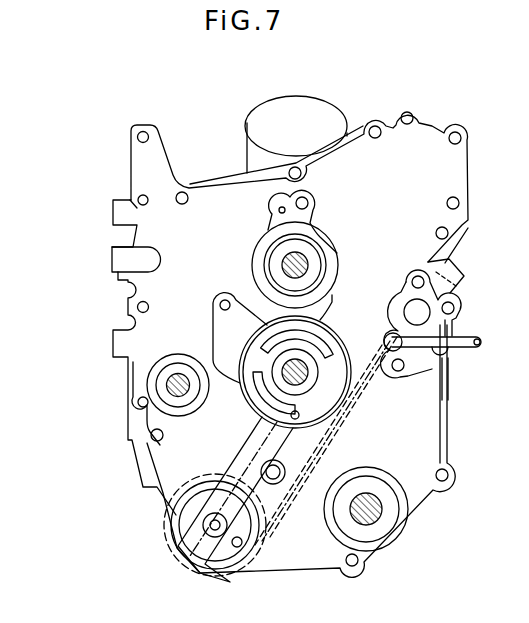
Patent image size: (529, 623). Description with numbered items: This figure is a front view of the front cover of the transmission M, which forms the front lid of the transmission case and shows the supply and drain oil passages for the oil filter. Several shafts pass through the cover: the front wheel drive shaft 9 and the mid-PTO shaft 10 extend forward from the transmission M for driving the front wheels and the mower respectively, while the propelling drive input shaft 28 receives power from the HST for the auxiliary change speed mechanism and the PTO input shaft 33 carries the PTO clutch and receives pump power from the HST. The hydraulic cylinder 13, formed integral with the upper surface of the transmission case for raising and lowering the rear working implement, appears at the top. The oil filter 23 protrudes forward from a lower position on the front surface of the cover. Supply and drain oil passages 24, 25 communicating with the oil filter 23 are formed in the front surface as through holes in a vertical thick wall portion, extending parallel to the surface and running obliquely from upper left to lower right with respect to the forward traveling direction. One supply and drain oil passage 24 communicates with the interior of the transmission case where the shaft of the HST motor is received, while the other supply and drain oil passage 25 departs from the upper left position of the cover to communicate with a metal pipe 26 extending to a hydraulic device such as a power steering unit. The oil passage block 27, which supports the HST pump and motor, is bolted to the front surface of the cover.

The hydraulic cylinder 13 is at (243, 125).
The PTO input shaft 33 is at (290, 262).
The propelling drive input shaft 28 is at (298, 368).
The front wheel drive shaft 9 is at (178, 370).
The metal pipe 26 is at (478, 336).
The oil passage block 27 is at (368, 395).
The supply and drain oil passage 25 is at (343, 431).
The supply and drain oil passage 24 is at (253, 453).
The oil filter 23 is at (162, 525).
The mid-PTO shaft 10 is at (382, 512).
The transmission M is at (88, 360).